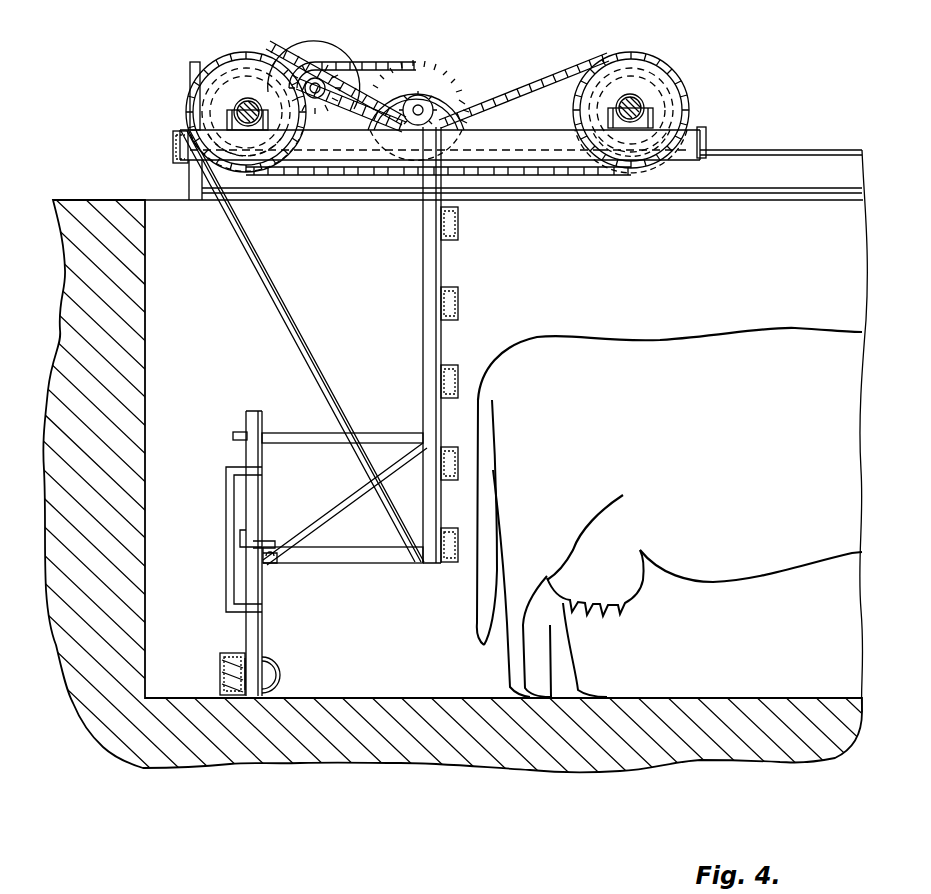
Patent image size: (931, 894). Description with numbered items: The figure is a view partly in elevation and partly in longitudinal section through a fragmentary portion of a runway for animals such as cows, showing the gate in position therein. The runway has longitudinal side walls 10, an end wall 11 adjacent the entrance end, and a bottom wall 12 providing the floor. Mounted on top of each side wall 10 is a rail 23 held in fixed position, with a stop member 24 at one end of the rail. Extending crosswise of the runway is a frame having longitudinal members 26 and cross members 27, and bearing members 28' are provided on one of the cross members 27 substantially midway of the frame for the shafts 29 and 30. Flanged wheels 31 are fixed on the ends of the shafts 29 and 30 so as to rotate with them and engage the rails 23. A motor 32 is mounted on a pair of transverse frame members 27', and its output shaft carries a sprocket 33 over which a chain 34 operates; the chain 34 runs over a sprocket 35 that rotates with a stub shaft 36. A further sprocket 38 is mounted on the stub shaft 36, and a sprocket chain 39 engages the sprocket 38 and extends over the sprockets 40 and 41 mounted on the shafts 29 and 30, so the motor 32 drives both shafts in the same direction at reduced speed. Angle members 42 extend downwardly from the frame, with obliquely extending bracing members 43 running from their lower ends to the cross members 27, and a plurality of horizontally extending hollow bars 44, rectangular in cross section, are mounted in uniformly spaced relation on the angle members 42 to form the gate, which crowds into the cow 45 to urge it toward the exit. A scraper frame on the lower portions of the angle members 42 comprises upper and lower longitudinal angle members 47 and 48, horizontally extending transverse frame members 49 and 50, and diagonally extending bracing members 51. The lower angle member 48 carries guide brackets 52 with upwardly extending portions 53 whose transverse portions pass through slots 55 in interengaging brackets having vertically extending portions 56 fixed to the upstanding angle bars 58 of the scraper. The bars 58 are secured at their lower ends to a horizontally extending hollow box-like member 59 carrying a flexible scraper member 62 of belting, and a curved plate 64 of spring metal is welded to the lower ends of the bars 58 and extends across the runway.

The side wall 10 is at (152, 200).
The end wall 11 is at (90, 264).
The bottom wall 12 is at (345, 755).
The rail 23 is at (810, 160).
The stop member 24 is at (192, 65).
The longitudinal member 26 is at (178, 145).
The cross member 27 is at (460, 129).
The transverse frame member 27' is at (390, 127).
The bearing member 28' is at (444, 94).
The shaft 29 is at (238, 108).
The shaft 30 is at (640, 104).
The flanged wheel 31 is at (648, 58).
The motor 32 is at (335, 45).
The sprocket 33 is at (326, 76).
The chain 34 is at (395, 60).
The sprocket 35 is at (457, 86).
The stub shaft 36 is at (445, 100).
The sprocket 38 is at (427, 98).
The sprocket chain 39 is at (548, 70).
The sprocket 40 is at (246, 58).
The sprocket 41 is at (612, 57).
The angle member 42 is at (438, 266).
The bracing member 43 is at (292, 312).
The hollow bar 44 is at (458, 222).
The cow 45 is at (615, 342).
The angle member 47 is at (235, 433).
The angle member 48 is at (270, 560).
The transverse frame member 49 is at (297, 433).
The transverse frame member 50 is at (355, 565).
The bracing member 51 is at (338, 518).
The guide bracket 52 is at (262, 542).
The upwardly extending portion 53 is at (240, 538).
The slot 55 is at (232, 492).
The vertically extending portion 56 is at (226, 575).
The upstanding angle bar 58 is at (262, 623).
The box-like member 59 is at (240, 655).
The scraper member 62 is at (222, 660).
The curved plate 64 is at (280, 672).